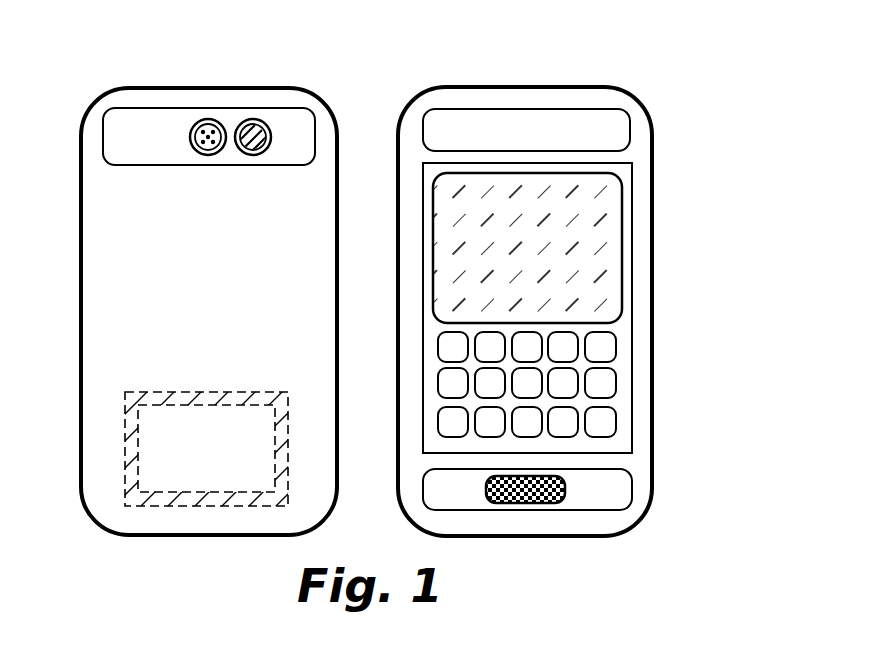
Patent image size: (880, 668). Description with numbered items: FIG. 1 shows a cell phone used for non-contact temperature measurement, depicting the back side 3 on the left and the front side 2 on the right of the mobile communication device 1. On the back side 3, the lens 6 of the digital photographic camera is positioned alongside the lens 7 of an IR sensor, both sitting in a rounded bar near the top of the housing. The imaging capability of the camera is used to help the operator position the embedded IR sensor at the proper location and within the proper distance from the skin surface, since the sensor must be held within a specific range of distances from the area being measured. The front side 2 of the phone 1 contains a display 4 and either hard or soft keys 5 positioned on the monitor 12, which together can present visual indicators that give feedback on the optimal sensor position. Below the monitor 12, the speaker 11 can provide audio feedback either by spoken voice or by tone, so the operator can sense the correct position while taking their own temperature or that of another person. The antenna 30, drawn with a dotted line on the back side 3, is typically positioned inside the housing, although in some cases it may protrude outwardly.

The mobile communication device 1 is at (391, 268).
The front side 2 is at (638, 135).
The back side 3 is at (140, 240).
The display 4 is at (603, 235).
The keys 5 is at (607, 381).
The lens of the digital photographic camera 6 is at (208, 122).
The lens of the IR sensor 7 is at (253, 121).
The speaker 11 is at (565, 492).
The monitor 12 is at (620, 443).
The antenna 30 is at (128, 475).